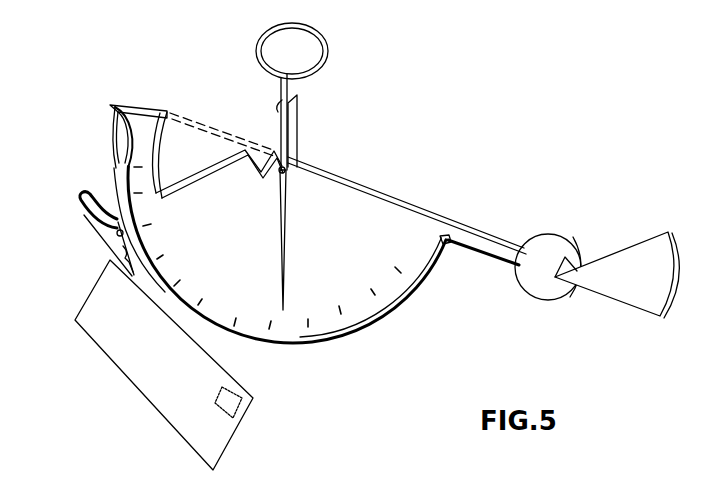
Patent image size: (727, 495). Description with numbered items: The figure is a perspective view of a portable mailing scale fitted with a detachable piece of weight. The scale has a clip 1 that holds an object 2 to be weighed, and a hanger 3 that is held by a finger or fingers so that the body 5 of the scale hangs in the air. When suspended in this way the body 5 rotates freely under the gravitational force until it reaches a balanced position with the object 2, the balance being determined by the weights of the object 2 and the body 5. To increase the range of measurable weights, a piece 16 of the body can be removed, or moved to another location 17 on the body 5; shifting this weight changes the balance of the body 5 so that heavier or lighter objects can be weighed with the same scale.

The clip 1 is at (83, 216).
The object 2 is at (122, 385).
The hanger 3 is at (310, 80).
The body 5 is at (402, 305).
The piece of the body 16 is at (193, 152).
The location on the body 17 is at (683, 250).